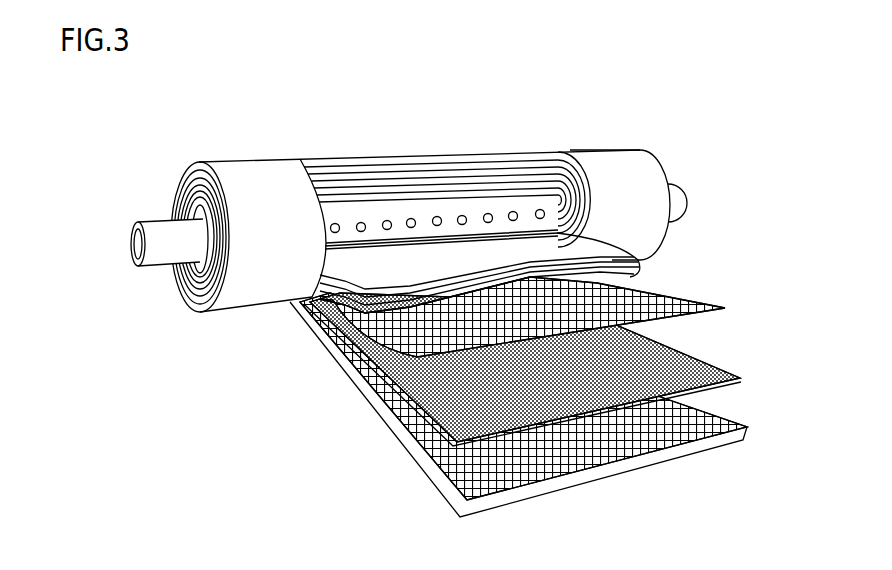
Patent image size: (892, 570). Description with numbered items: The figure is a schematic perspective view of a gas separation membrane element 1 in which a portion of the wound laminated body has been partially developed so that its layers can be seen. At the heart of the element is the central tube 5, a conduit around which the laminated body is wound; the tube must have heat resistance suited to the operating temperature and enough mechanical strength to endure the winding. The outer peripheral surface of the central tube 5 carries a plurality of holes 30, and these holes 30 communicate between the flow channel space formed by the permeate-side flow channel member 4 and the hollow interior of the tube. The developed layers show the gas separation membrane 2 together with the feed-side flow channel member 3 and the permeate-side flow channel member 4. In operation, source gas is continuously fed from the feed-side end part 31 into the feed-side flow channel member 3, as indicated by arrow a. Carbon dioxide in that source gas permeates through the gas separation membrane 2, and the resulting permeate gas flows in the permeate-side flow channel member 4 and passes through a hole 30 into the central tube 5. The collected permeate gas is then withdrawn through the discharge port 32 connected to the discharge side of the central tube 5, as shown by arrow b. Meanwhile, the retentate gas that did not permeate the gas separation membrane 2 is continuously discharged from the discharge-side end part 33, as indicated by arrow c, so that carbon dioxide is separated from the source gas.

The gas separation membrane element 1 is at (607, 128).
The gas separation membrane 2 is at (686, 370).
The feed-side flow channel member 3 is at (727, 410).
The permeate-side flow channel member 4 is at (662, 303).
The central tube 5 is at (373, 215).
The holes 30 is at (361, 222).
The feed-side end part 31 is at (670, 158).
The discharge port 32 is at (122, 231).
The discharge-side end part 33 is at (183, 304).
The arrow a is at (682, 176).
The arrow b is at (140, 247).
The arrow c is at (178, 190).